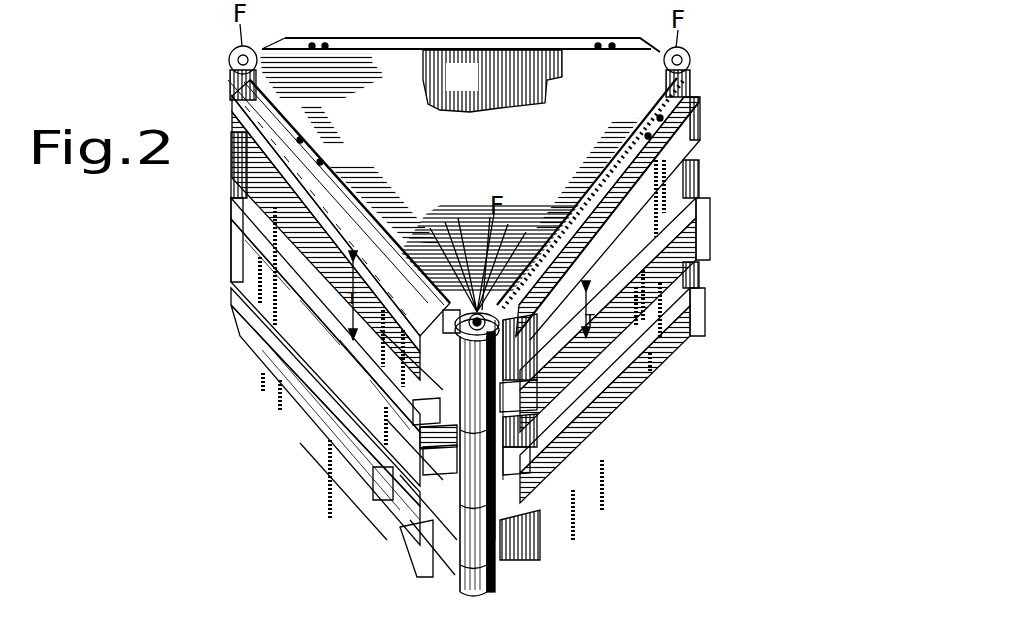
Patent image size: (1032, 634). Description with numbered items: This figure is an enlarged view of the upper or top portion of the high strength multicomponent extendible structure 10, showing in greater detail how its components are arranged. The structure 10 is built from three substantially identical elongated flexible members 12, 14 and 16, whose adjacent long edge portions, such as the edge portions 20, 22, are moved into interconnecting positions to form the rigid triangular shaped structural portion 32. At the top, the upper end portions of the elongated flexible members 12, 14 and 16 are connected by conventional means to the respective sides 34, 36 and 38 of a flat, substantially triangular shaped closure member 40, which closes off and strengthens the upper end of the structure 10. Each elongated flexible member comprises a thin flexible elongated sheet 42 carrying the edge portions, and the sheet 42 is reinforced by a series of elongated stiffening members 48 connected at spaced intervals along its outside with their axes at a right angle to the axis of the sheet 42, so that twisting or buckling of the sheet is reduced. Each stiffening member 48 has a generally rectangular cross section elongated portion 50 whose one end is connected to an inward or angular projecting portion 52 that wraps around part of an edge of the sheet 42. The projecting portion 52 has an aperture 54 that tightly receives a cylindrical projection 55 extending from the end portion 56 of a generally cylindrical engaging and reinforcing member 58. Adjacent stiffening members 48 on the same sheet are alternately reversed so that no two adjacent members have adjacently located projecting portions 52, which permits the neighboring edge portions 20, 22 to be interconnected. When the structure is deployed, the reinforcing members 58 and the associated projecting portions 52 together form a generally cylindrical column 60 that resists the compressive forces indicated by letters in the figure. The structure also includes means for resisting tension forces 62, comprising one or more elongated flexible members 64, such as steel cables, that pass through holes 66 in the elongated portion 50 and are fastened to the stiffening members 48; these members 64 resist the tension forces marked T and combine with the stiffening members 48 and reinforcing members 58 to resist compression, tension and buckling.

The high strength multicomponent extendible structure 10 is at (724, 86).
The elongated flexible member 12 is at (678, 278).
The elongated flexible member 14 is at (305, 328).
The elongated flexible member 16 is at (477, 90).
The edge portion 20 is at (518, 503).
The edge portion 22 is at (388, 480).
The rigid triangular shaped structural portion 32 is at (730, 202).
The side of closure member 34 is at (632, 140).
The side of closure member 36 is at (290, 128).
The side of closure member 38 is at (400, 40).
The closure member 40 is at (478, 150).
The thin flexible elongated sheet 42 is at (523, 64).
The elongated stiffening member 48 is at (232, 308).
The elongated portion 50 is at (694, 102).
The projecting portion 52 is at (683, 190).
The aperture 54 is at (468, 308).
The projection 55 is at (472, 310).
The end portion 56 is at (405, 208).
The cylindrical engaging and reinforcing member 58 is at (690, 150).
The cylindrical column 60 is at (395, 510).
The means for resisting tension forces 62 is at (325, 44).
The elongated flexible member 64 is at (688, 198).
The hole 66 is at (420, 398).